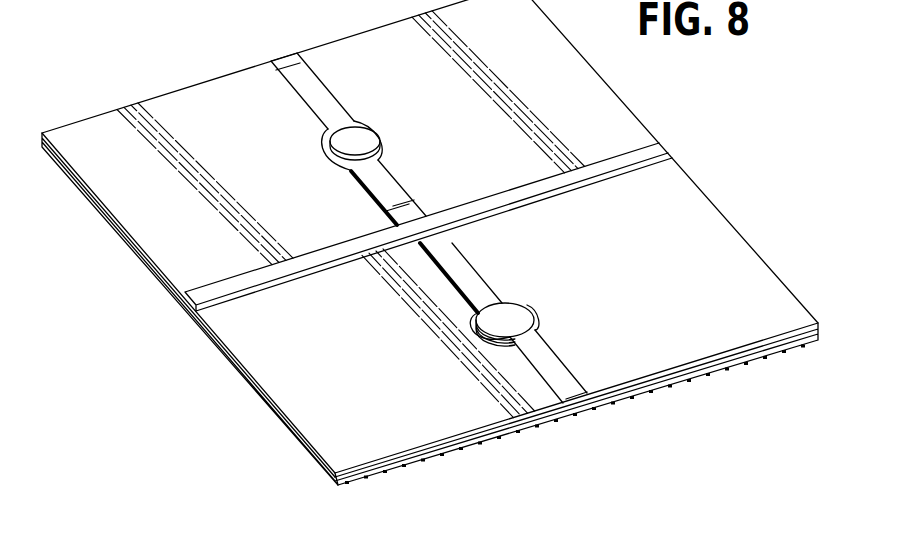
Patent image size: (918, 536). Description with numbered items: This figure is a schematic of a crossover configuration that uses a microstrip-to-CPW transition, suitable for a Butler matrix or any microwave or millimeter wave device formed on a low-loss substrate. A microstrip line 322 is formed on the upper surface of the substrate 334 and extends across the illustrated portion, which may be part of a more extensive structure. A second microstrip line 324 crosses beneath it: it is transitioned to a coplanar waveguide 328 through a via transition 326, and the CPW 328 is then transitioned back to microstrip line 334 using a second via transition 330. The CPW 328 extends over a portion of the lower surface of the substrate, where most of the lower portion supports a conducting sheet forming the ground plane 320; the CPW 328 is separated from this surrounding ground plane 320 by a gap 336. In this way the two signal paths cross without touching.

The ground plane 320 is at (264, 362).
The microstrip line 322 is at (664, 156).
The second microstrip line 324 is at (287, 66).
The via transition 326 is at (352, 142).
The CPW 328 is at (474, 288).
The via transition 330 is at (517, 324).
The microstrip line 334 is at (573, 390).
The gap 336 is at (477, 338).